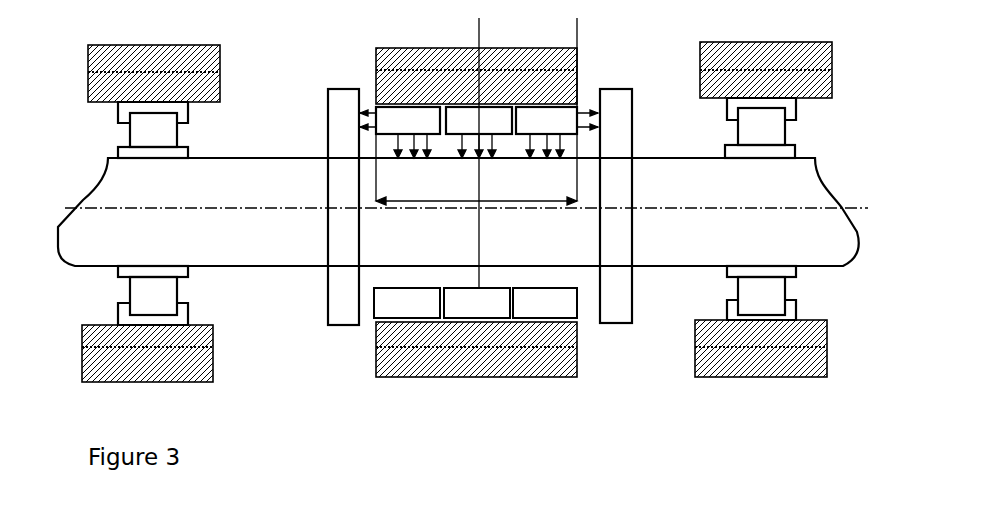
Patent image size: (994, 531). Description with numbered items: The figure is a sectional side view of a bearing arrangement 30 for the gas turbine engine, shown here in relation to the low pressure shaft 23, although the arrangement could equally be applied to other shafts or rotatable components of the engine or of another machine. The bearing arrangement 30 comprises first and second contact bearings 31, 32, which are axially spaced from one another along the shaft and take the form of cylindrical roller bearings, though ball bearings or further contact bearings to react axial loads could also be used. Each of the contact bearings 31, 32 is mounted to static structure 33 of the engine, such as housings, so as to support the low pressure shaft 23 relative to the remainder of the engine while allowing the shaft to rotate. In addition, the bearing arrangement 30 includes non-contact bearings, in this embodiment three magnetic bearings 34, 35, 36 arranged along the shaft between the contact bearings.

The low pressure shaft 23 is at (257, 268).
The bearing arrangement 30 is at (484, 254).
The first contact bearing 31 is at (128, 130).
The second contact bearing 32 is at (778, 130).
The static structure 33 is at (197, 363).
The magnetic bearing 34 is at (403, 118).
The magnetic bearing 35 is at (563, 117).
The magnetic bearing 36 is at (463, 112).